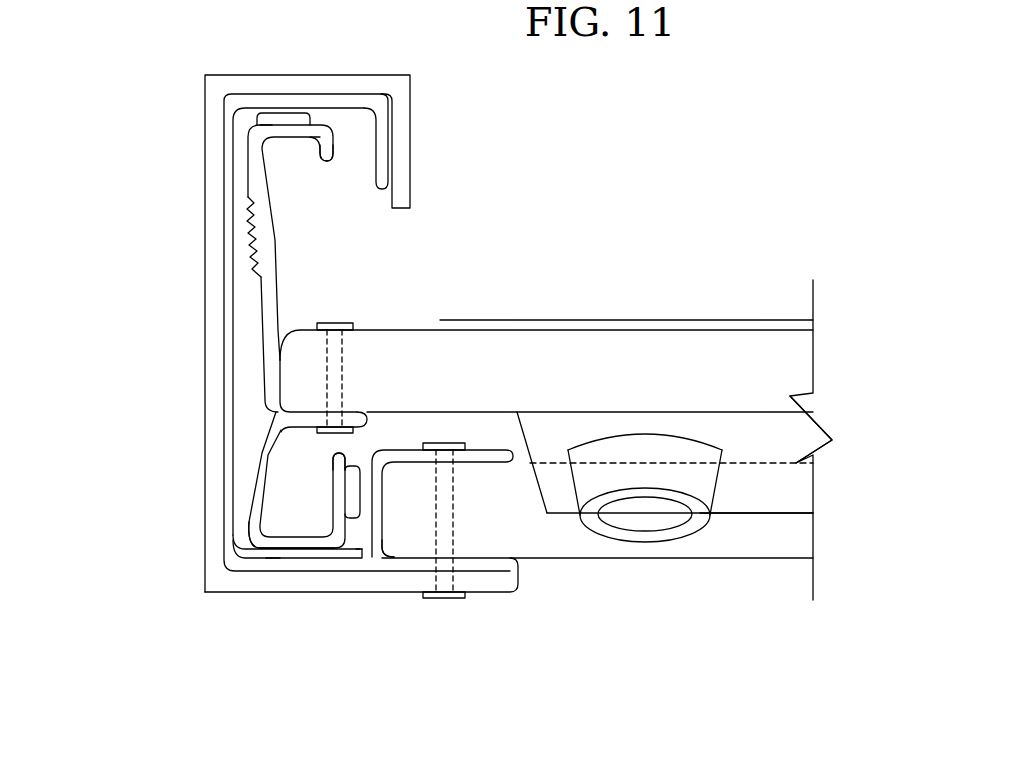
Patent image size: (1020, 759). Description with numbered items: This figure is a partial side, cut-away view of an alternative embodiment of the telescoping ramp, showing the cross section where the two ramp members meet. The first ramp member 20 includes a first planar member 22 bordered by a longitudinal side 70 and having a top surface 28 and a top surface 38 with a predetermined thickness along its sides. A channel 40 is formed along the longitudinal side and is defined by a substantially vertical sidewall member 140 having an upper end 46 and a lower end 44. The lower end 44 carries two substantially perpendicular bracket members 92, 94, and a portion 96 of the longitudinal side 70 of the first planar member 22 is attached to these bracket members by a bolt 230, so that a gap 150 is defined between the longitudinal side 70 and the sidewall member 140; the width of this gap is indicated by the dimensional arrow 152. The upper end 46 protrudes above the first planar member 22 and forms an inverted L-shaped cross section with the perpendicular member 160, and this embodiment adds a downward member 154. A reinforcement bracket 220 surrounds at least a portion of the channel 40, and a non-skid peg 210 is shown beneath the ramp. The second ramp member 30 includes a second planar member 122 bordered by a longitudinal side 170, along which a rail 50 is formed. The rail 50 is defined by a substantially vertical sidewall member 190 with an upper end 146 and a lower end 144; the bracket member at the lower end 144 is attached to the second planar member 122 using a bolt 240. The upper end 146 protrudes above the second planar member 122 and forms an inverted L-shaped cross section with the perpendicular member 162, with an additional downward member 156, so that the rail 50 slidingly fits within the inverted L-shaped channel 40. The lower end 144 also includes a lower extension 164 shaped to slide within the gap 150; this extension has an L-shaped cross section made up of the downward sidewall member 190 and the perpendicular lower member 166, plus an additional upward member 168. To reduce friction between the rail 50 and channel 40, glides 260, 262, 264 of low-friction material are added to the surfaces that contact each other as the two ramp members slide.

The first ramp member 20 is at (680, 540).
The first planar member 22 is at (770, 538).
The top surface 28 is at (828, 438).
The second ramp member 30 is at (705, 411).
The top surface 38 is at (357, 410).
The channel 40 is at (218, 253).
The lower end 44 is at (227, 515).
The upper end 46 is at (298, 314).
The rail 50 is at (262, 302).
The longitudinal side 70 is at (383, 548).
The bracket member 92 is at (486, 563).
The bracket member 94 is at (500, 440).
The portion 96 is at (592, 572).
The second planar member 122 is at (640, 356).
The sidewall member 140 is at (230, 212).
The lower end 144 is at (245, 564).
The upper end 146 is at (301, 209).
The gap 150 is at (300, 505).
The dimensional arrow 152 is at (365, 720).
The downward member 154 is at (383, 148).
The downward member 156 is at (333, 143).
The perpendicular member 160 is at (279, 111).
The perpendicular member 162 is at (322, 133).
The lower extension 164 is at (300, 543).
The lower member 166 is at (272, 557).
The upward member 168 is at (340, 487).
The longitudinal side 170 is at (273, 392).
The sidewall member 190 is at (469, 343).
The non-skid peg 210 is at (600, 525).
The reinforcement bracket 220 is at (375, 74).
The bolt 230 is at (483, 507).
The bolt 240 is at (336, 323).
The glide 260 is at (270, 110).
The glide 262 is at (272, 559).
The glide 264 is at (355, 510).